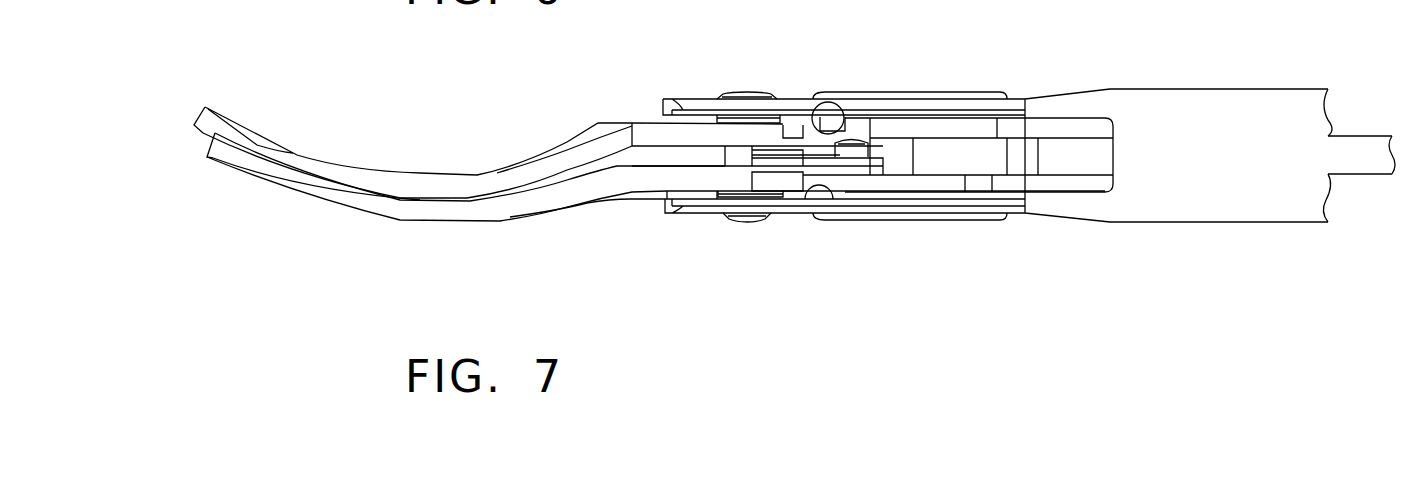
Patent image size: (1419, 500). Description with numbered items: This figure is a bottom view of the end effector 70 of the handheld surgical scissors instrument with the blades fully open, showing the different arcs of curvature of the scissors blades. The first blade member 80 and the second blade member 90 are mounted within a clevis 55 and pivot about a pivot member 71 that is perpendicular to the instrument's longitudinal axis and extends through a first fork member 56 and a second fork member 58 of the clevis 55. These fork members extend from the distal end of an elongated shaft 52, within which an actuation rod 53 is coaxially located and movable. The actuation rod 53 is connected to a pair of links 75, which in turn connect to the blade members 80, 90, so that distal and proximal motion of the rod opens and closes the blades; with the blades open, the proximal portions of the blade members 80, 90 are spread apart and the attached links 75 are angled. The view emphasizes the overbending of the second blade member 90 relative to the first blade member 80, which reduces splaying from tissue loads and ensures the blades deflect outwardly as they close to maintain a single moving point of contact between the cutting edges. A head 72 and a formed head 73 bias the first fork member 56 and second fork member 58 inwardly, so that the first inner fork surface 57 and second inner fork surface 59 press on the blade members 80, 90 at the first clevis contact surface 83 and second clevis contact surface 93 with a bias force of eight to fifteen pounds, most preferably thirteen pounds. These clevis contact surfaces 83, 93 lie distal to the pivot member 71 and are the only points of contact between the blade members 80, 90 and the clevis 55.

The end effector 70 is at (272, 58).
The first blade member 80 is at (423, 156).
The second blade member 90 is at (428, 236).
The second clevis contact surface 93 is at (667, 207).
The first clevis contact surface 83 is at (665, 100).
The formed head 73 is at (730, 222).
The head 72 is at (740, 93).
The pivot member 71 is at (745, 225).
The first fork member 56 is at (800, 97).
The clevis 55 is at (812, 97).
The first inner fork surface 57 is at (843, 118).
The second inner fork surface 59 is at (833, 175).
The second fork member 58 is at (905, 222).
The links 75 is at (925, 185).
The actuation rod 53 is at (1100, 170).
The elongated shaft 52 is at (1188, 89).